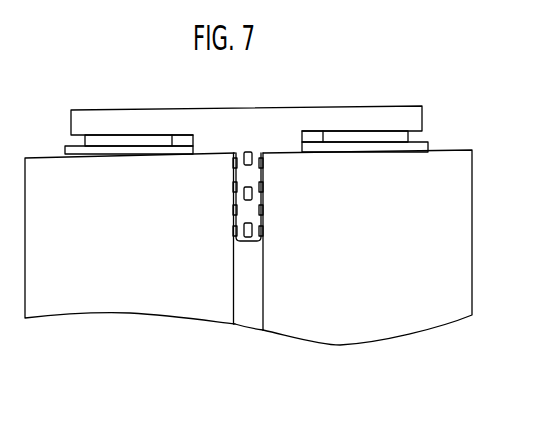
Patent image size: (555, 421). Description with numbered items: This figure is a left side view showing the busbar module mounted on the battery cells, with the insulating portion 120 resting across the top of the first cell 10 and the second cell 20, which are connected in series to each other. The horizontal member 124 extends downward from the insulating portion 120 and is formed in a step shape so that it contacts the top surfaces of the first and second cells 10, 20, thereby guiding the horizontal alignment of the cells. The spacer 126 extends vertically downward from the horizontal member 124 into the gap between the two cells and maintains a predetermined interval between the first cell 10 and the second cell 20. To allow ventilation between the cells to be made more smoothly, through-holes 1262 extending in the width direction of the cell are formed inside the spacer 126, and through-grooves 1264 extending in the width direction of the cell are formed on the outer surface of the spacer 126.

The first cell 10 is at (367, 323).
The second cell 20 is at (138, 298).
The insulating portion 120 is at (430, 112).
The horizontal member 124 is at (288, 146).
The spacer 126 is at (245, 175).
The through-holes 1262 is at (252, 193).
The through-grooves 1264 is at (262, 208).